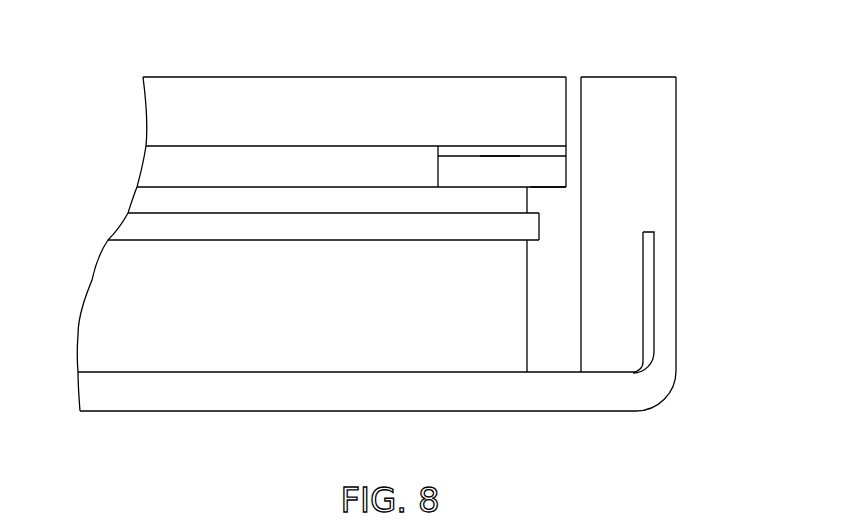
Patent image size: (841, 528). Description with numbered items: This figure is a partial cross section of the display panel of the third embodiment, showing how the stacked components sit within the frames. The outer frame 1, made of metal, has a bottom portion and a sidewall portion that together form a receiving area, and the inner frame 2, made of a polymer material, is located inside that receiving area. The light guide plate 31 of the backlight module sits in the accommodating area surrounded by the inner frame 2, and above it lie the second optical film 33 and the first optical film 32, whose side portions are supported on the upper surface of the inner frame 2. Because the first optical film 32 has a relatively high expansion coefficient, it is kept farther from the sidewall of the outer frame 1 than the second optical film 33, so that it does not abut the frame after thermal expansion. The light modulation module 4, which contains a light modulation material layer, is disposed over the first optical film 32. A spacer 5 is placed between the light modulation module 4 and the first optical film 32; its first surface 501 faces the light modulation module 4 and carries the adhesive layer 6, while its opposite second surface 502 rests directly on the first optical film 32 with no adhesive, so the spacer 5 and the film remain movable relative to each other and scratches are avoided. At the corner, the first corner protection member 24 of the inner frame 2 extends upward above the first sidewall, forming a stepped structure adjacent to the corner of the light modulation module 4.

The outer frame 1 is at (667, 302).
The inner frame 2 is at (612, 352).
The light modulation module 4 is at (343, 88).
The spacer 5 is at (452, 177).
The adhesive layer 6 is at (455, 155).
The first corner protection member 24 is at (622, 88).
The light guide plate 31 is at (462, 353).
The first optical film 32 is at (517, 203).
The second optical film 33 is at (529, 228).
The first surface 501 is at (499, 155).
The second surface 502 is at (550, 188).